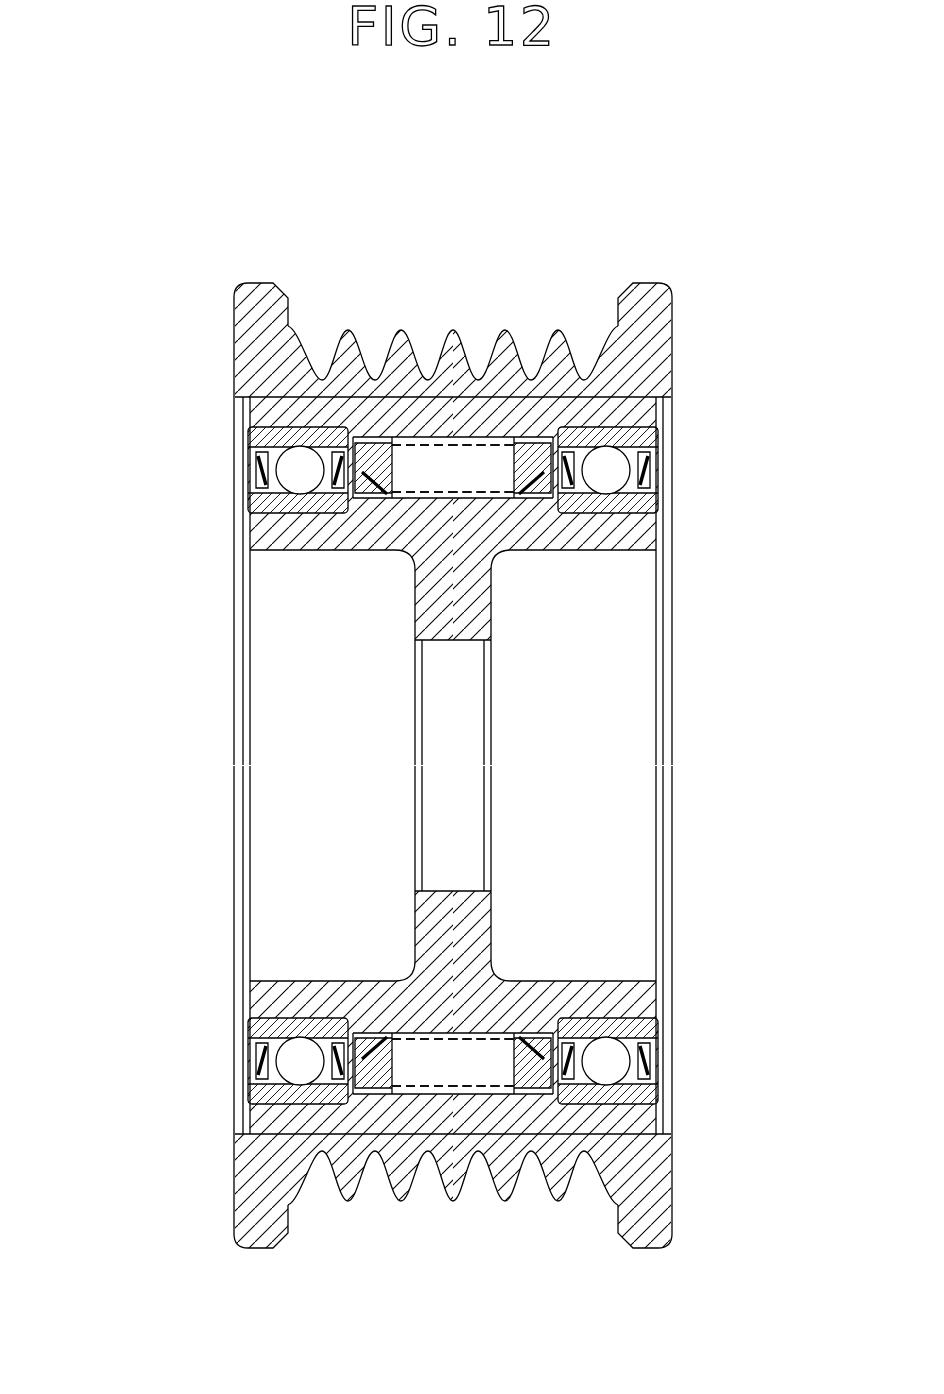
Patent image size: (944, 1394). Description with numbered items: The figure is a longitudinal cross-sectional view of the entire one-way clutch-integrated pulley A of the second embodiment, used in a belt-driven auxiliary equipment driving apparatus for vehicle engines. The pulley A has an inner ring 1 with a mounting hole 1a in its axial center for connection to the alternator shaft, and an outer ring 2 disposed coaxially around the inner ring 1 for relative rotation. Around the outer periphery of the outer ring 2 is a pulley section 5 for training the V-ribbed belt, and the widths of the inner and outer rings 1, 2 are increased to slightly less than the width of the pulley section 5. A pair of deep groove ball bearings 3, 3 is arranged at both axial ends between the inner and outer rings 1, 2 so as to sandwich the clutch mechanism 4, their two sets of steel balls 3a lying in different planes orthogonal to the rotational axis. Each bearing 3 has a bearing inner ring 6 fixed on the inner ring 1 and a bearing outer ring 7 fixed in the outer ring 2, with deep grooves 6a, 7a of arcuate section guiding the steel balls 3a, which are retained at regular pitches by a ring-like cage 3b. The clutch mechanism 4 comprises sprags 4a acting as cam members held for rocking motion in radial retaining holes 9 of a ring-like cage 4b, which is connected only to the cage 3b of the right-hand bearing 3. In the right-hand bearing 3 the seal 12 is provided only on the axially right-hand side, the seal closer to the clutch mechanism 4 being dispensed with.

The one-way clutch-integrated pulley A is at (58, 113).
The inner ring 1 is at (406, 765).
The mounting hole 1a is at (438, 797).
The outer ring 2 is at (383, 783).
The deep groove ball bearing 3 is at (444, 334).
The steel balls 3a is at (326, 425).
The cage 3b is at (444, 478).
The clutch mechanism 4 is at (460, 733).
The sprags 4a is at (437, 437).
The cage 4b is at (518, 436).
The pulley section 5 is at (233, 320).
The bearing inner ring 6 is at (448, 1111).
The deep groove 6a is at (303, 1030).
The bearing outer ring 7 is at (285, 1115).
The deep groove 7a is at (300, 1108).
The retaining holes 9 is at (399, 396).
The seal 12 is at (247, 1087).